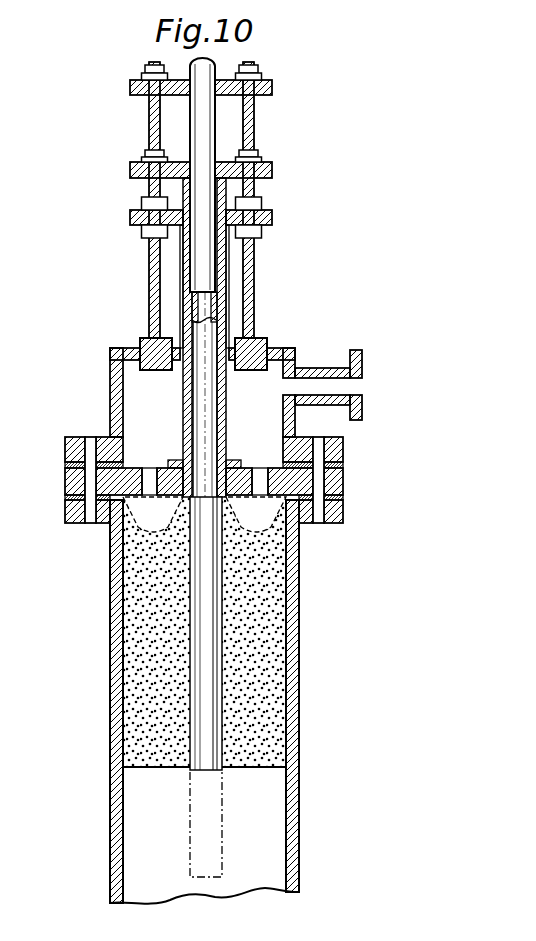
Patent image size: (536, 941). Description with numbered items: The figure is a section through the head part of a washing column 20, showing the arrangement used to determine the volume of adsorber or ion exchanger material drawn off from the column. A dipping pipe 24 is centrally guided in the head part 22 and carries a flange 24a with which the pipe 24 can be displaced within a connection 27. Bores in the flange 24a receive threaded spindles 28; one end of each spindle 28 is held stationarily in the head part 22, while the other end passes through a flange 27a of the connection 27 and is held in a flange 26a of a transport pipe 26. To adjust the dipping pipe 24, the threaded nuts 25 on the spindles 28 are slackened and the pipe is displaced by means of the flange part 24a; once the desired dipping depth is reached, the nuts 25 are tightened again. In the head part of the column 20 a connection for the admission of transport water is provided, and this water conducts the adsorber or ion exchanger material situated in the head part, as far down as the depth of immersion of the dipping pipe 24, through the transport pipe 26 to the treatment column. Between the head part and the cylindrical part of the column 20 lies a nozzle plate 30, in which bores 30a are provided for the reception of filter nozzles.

The column 20 is at (303, 634).
The head part 22 is at (365, 330).
The dipping pipe 24 is at (195, 393).
The flange 24a is at (132, 170).
The threaded nuts 25 is at (268, 226).
The transport pipe 26 is at (215, 66).
The flange of transport pipe 26a is at (272, 87).
The connection 27 is at (230, 263).
The flange of connection 27a is at (132, 218).
The threaded spindles 28 is at (150, 288).
The nozzle plate 30 is at (72, 488).
The bores 30a is at (150, 480).